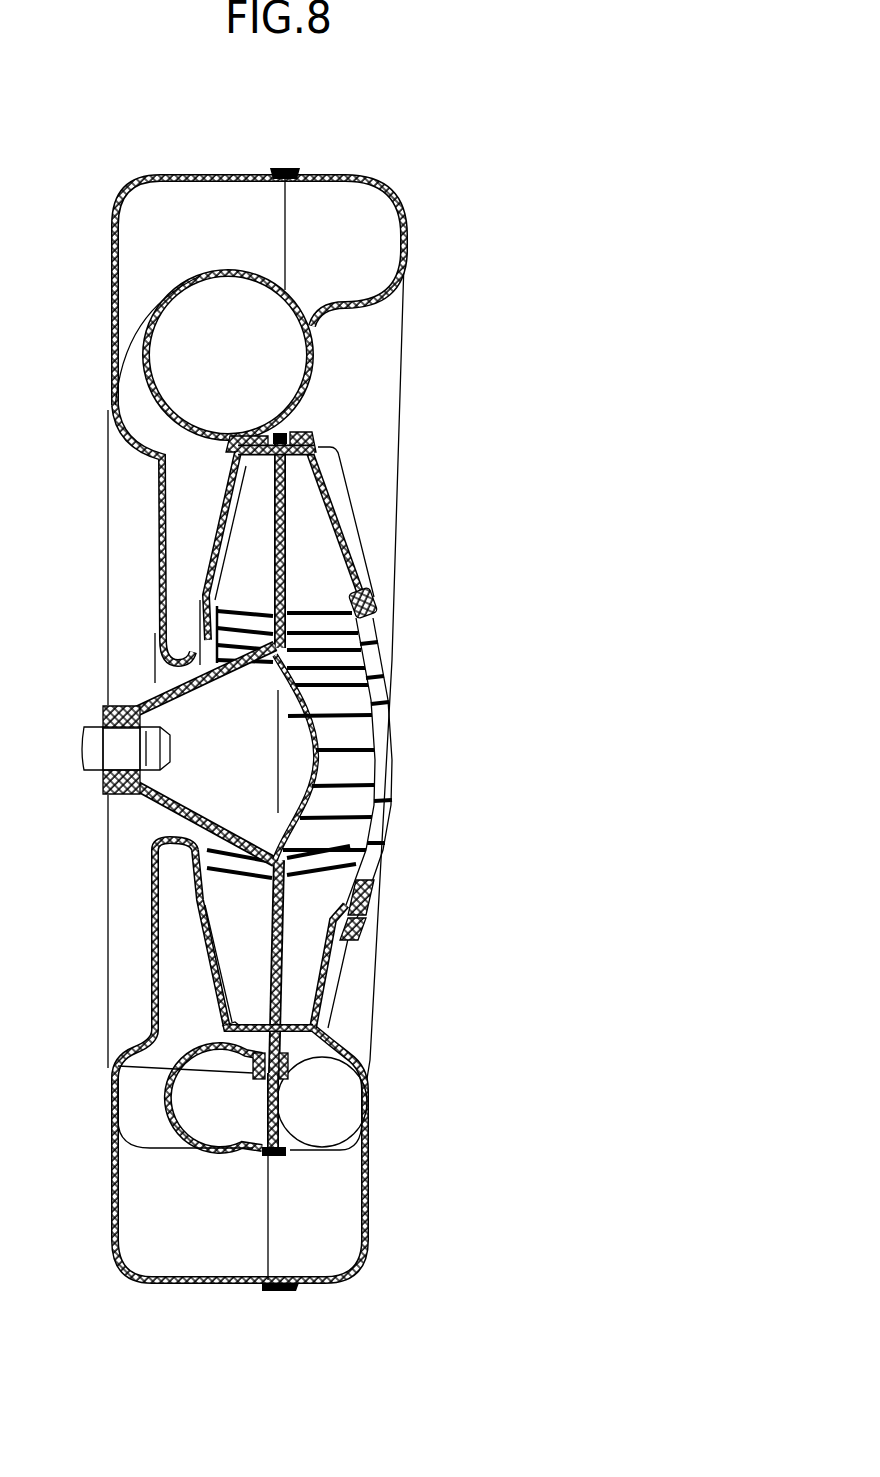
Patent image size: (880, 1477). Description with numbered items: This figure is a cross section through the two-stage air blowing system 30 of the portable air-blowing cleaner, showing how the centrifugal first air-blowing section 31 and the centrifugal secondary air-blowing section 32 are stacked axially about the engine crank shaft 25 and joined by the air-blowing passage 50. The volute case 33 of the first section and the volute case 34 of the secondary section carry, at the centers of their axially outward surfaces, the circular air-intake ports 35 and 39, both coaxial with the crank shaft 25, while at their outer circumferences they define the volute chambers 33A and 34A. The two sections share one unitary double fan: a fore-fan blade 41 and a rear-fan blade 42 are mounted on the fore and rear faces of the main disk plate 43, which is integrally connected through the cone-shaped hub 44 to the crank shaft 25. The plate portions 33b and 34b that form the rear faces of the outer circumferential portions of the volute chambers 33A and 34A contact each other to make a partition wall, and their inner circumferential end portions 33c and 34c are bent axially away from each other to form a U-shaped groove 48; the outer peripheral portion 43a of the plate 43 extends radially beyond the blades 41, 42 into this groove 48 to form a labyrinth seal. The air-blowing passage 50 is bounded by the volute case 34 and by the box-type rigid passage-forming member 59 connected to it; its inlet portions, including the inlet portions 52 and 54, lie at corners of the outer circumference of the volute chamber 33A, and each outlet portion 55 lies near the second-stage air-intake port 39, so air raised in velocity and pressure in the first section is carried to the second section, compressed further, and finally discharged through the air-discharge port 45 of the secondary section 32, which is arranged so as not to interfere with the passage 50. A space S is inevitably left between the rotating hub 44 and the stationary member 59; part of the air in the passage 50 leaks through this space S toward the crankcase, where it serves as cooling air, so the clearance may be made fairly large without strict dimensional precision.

The crank shaft 25 is at (95, 750).
The air blowing system 30 is at (412, 565).
The first air-blowing section 31 is at (337, 445).
The secondary air-blowing section 32 is at (216, 510).
The volute case 33 is at (342, 540).
The volute chamber 33A is at (306, 1131).
The plate portion 33b is at (285, 1122).
The inner circumferential end portion 33c is at (340, 1050).
The volute case 34 is at (205, 595).
The volute chamber 34A is at (214, 1126).
The plate portion 34b is at (262, 1108).
The inner circumferential end portion 34c is at (185, 1095).
The air-intake port 35 is at (372, 822).
The air-intake port 39 is at (165, 683).
The fore-fan blade 41 is at (355, 676).
The rear-fan blade 42 is at (160, 632).
The main disk plate 43 is at (277, 940).
The outer peripheral portion 43a is at (223, 1028).
The cone-shaped hub 44 is at (195, 820).
The air-discharge port 45 is at (172, 288).
The U-shaped groove 48 is at (282, 1058).
The air-blowing passage 50 is at (245, 215).
The inlet portion 52 is at (360, 210).
The inlet portion 54 is at (328, 1243).
The outlet portion 55 is at (185, 618).
The passage-forming member 59 is at (205, 178).
The space S is at (185, 838).